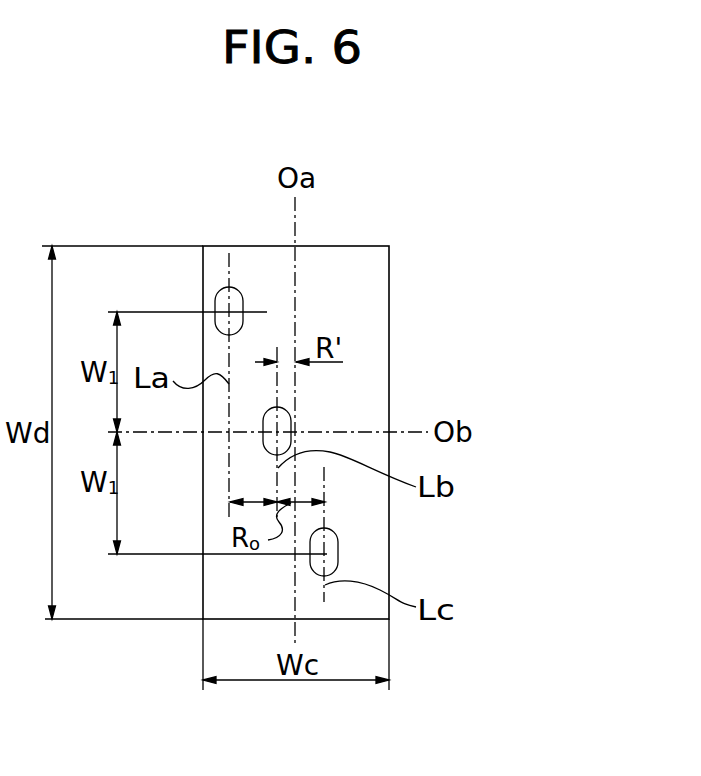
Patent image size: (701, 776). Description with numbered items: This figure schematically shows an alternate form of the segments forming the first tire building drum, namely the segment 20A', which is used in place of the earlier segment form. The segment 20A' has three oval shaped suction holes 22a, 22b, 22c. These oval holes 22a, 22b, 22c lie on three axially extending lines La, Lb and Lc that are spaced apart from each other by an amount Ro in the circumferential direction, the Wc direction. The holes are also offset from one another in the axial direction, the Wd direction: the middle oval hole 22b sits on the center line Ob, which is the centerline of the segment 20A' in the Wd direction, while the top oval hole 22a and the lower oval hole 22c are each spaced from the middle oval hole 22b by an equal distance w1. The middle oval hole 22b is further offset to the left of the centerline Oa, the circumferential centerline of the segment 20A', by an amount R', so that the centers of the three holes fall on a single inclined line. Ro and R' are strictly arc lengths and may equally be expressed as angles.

The segment 20A' is at (410, 400).
The top oval hole 22a is at (245, 312).
The middle oval hole 22b is at (282, 422).
The lower oval hole 22c is at (338, 550).